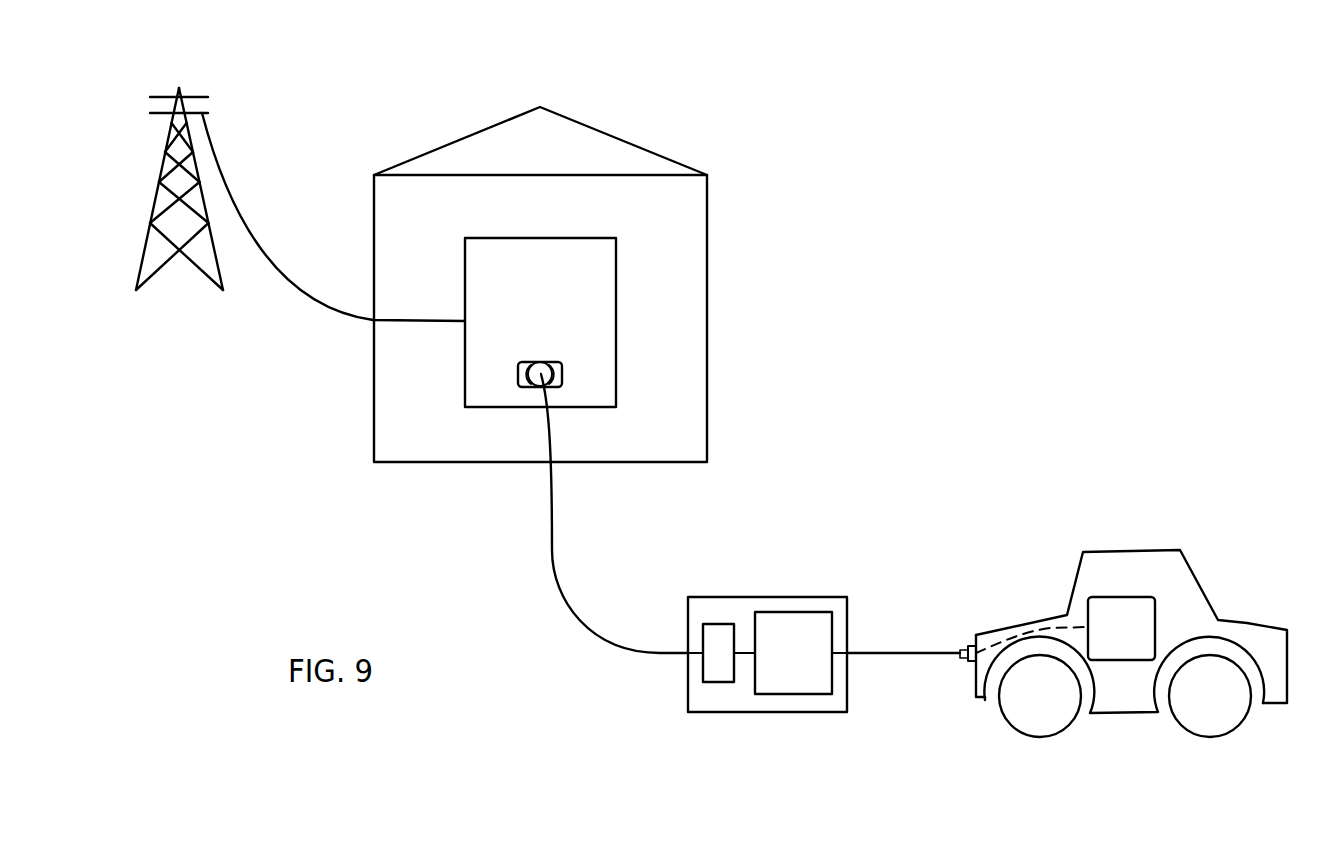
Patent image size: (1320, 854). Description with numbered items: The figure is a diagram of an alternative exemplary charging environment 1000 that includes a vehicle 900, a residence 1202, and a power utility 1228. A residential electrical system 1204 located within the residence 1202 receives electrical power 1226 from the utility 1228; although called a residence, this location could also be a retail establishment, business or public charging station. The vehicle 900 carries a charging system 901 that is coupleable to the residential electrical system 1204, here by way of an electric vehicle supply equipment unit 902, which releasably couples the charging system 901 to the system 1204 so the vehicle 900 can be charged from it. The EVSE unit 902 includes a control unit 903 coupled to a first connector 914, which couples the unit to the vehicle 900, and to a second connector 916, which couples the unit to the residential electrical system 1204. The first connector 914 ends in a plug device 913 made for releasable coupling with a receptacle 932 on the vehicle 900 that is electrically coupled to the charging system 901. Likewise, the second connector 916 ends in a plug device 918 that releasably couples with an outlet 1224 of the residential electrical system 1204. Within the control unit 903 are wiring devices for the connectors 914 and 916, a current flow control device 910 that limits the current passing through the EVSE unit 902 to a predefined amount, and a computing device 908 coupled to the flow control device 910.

The charging environment 1000 is at (431, 53).
The electric vehicle supply equipment unit 902 is at (852, 429).
The power utility 1228 is at (178, 298).
The electrical power 1226 is at (303, 285).
The residence 1202 is at (561, 156).
The residential electrical system 1204 is at (561, 287).
The outlet 1224 is at (518, 378).
The plug device 918 is at (562, 374).
The second connector 916 is at (552, 562).
The control unit 903 is at (767, 714).
The current flow control device 910 is at (708, 633).
The computing device 908 is at (756, 614).
The first connector 914 is at (898, 652).
The plug device 913 is at (970, 665).
The receptacle 932 is at (970, 647).
The vehicle 900 is at (1149, 584).
The charging system 901 is at (1121, 628).